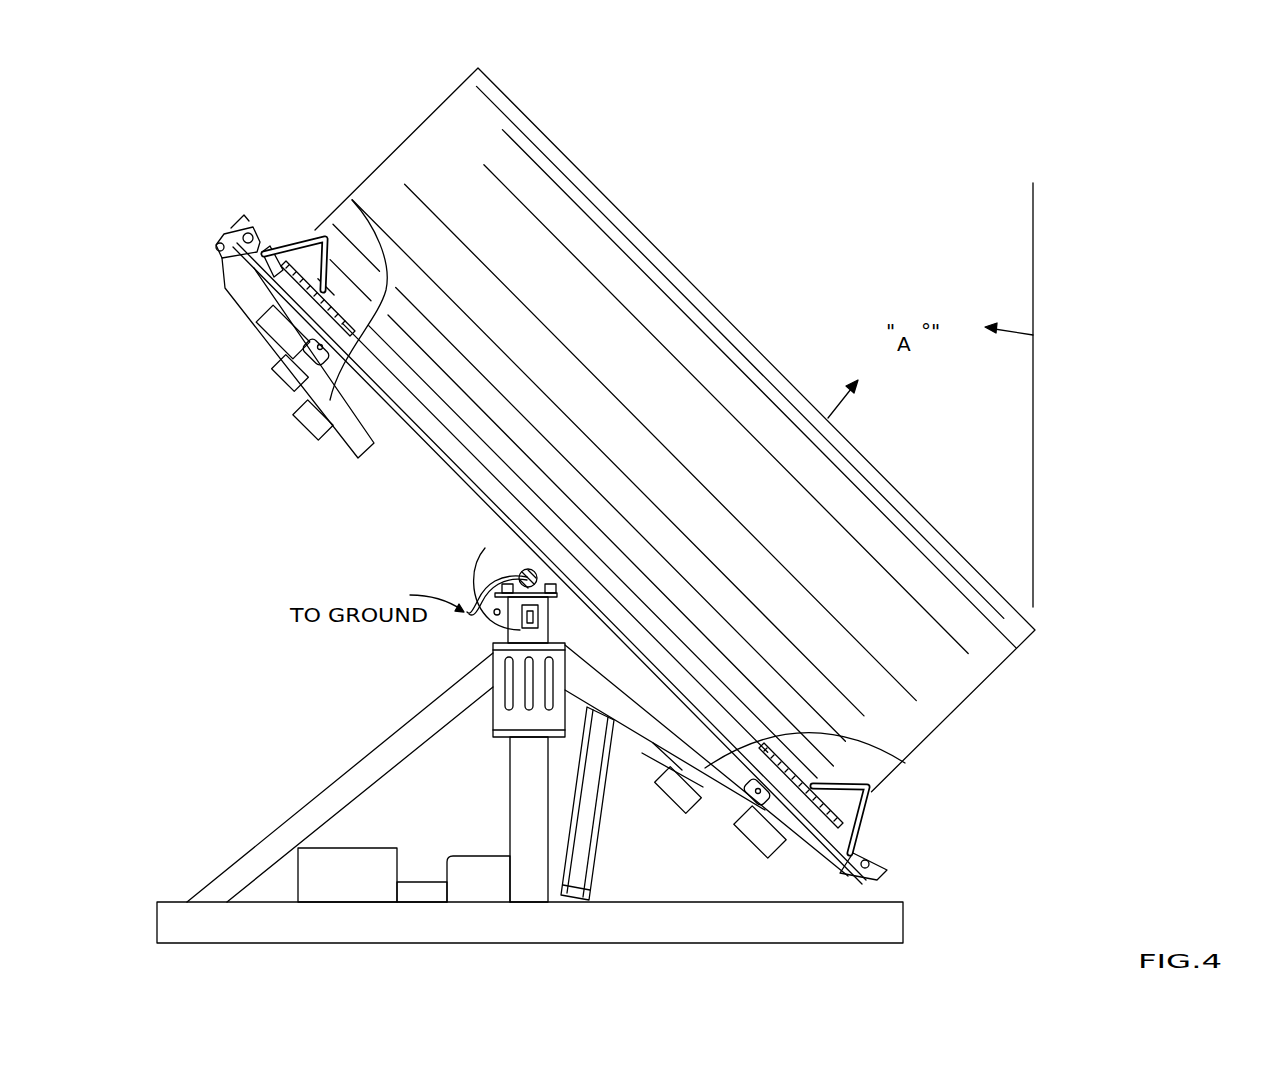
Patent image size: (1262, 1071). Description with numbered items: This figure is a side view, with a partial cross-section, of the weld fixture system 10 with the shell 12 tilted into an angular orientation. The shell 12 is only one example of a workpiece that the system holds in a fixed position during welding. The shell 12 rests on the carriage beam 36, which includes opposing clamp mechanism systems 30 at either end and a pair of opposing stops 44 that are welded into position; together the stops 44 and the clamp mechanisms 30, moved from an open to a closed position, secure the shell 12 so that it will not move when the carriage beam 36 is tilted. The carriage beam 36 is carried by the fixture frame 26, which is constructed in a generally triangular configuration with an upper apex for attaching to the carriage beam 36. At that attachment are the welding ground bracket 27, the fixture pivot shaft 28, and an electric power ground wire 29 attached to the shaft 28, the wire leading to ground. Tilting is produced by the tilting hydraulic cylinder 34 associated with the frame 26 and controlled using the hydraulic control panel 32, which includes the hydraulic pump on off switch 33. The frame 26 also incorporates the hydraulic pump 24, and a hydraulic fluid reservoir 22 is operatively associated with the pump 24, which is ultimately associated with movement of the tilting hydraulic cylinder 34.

The weld fixture system 10 is at (1160, 392).
The shell 12 is at (428, 122).
The hydraulic fluid reservoir 22 is at (350, 882).
The hydraulic pump 24 is at (476, 876).
The fixture frame 26 is at (337, 775).
The welding ground bracket 27 is at (528, 572).
The fixture pivot shaft 28 is at (533, 568).
The electric power ground wire 29 is at (477, 587).
The clamp mechanism system 30 is at (294, 200).
The hydraulic control panel 32 is at (490, 712).
The hydraulic pump on off switch 33 is at (520, 620).
The tilting hydraulic cylinder 34 is at (600, 837).
The carriage beam 36 is at (405, 475).
The stop 44 is at (283, 248).